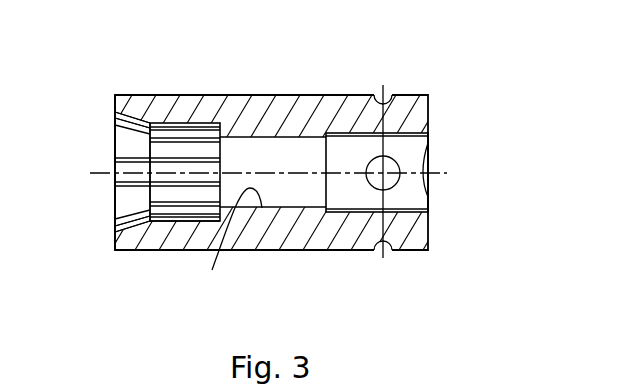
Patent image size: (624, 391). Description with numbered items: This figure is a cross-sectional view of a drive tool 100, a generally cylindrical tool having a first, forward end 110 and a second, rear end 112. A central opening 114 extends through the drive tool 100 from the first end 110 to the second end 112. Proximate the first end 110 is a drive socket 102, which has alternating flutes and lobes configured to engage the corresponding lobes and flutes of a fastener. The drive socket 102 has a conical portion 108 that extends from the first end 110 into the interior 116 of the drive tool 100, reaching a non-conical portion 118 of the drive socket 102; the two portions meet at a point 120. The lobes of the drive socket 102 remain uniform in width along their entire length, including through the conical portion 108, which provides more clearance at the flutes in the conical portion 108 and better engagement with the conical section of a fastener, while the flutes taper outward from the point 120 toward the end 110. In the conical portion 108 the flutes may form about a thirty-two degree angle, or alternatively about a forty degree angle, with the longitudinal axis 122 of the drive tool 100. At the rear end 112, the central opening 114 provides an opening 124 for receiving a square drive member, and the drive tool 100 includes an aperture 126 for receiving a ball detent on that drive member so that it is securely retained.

The drive tool 100 is at (332, 288).
The drive socket 102 is at (80, 120).
The conical portion 108 is at (136, 78).
The first, forward end 110 is at (115, 250).
The second, rear end 112 is at (430, 235).
The central opening 114 is at (250, 140).
The interior 116 is at (223, 245).
The non-conical portion 118 is at (200, 91).
The point 120 is at (165, 207).
The longitudinal axis 122 is at (300, 142).
The opening 124 is at (430, 203).
The aperture 126 is at (384, 165).